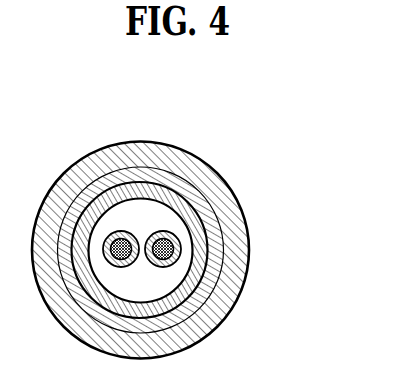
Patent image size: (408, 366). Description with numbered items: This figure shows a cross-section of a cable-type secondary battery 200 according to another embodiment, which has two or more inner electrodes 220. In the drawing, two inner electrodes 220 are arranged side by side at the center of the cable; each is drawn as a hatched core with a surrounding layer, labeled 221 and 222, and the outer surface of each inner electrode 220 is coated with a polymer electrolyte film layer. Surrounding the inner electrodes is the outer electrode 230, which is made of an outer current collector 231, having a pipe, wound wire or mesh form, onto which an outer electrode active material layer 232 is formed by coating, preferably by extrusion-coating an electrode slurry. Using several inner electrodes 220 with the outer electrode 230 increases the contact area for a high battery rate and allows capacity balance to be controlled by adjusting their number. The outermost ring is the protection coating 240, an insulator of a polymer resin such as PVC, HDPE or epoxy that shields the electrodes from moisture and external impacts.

The cable-type secondary battery 200 is at (100, 126).
The inner electrode 220 is at (188, 113).
The conductor core 221 is at (163, 241).
The conductor insulation 222 is at (167, 232).
The outer electrode 230 is at (287, 225).
The outer current collector 231 is at (215, 253).
The outer electrode active material layer 232 is at (202, 241).
The protection coating 240 is at (221, 189).